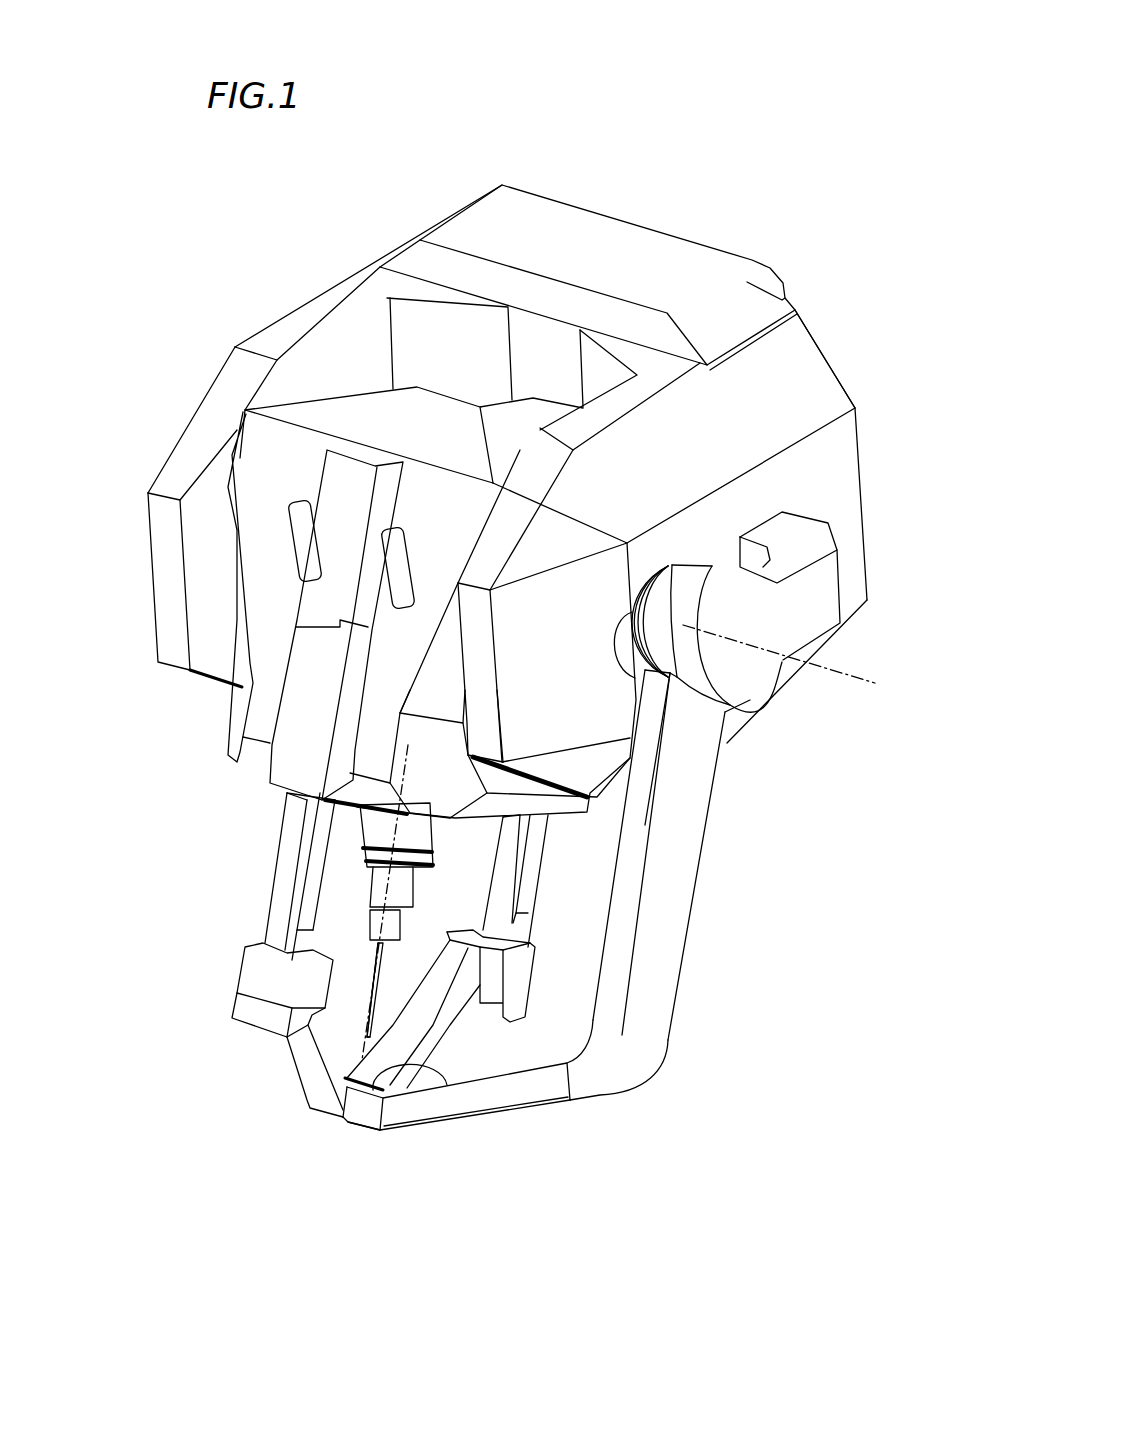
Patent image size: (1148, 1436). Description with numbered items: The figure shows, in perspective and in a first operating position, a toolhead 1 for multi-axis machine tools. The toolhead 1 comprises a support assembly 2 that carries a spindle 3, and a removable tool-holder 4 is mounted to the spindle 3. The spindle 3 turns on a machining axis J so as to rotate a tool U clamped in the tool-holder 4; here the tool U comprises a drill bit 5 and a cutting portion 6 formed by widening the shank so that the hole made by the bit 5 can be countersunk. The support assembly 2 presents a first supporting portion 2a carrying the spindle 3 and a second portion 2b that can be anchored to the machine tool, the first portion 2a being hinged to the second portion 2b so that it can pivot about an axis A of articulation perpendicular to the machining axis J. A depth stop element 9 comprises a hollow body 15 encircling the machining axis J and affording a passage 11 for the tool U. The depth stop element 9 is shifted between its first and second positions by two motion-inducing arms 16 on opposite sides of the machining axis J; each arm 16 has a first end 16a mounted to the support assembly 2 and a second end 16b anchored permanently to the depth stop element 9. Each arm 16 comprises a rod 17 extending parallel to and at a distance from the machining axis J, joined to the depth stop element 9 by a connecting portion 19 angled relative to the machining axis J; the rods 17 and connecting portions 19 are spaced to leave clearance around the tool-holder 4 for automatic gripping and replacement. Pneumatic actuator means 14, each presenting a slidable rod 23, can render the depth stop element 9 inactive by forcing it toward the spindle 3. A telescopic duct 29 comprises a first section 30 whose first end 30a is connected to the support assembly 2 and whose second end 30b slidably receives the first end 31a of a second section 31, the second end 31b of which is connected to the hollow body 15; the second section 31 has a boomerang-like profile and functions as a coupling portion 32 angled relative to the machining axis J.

The toolhead 1 is at (417, 163).
The support assembly 2 is at (268, 318).
The first supporting portion 2a is at (242, 687).
The second portion 2b is at (790, 372).
The spindle 3 is at (380, 823).
The tool-holder 4 is at (373, 875).
The drill bit 5 is at (366, 1042).
The cutting portion 6 is at (370, 960).
The depth stop element 9 is at (363, 1132).
The passage 11 is at (517, 1095).
The actuator means 14 is at (295, 910).
The hollow body 15 is at (345, 1118).
The motion-inducing arm 16 is at (278, 822).
The first end 16a is at (313, 657).
The second end 16b is at (320, 1103).
The rod 17 is at (287, 848).
The connecting portion 19 is at (297, 1045).
The rod 23 is at (283, 802).
The duct 29 is at (695, 967).
The first section 30 is at (700, 742).
The first end 30a is at (690, 572).
The second end 30b is at (682, 875).
The second section 31 is at (650, 1040).
The first end 31a is at (610, 882).
The second end 31b is at (393, 1118).
The coupling portion 32 is at (520, 1100).
The axis of articulation A is at (860, 675).
The machining axis J is at (413, 783).
The tool U is at (370, 987).